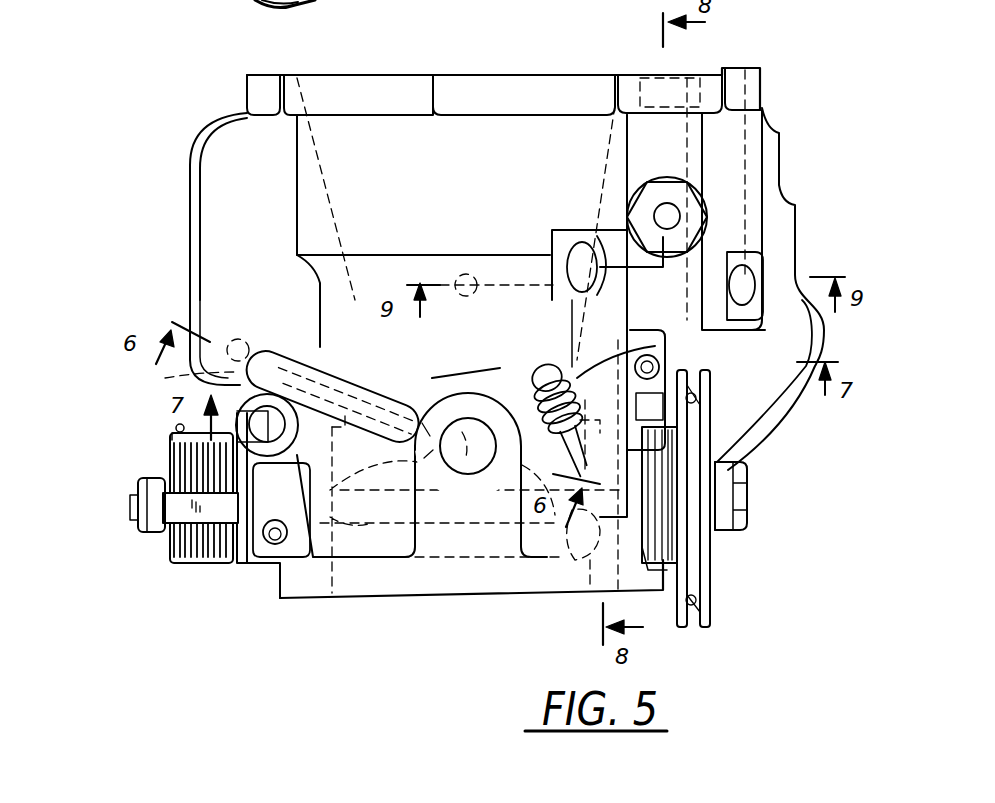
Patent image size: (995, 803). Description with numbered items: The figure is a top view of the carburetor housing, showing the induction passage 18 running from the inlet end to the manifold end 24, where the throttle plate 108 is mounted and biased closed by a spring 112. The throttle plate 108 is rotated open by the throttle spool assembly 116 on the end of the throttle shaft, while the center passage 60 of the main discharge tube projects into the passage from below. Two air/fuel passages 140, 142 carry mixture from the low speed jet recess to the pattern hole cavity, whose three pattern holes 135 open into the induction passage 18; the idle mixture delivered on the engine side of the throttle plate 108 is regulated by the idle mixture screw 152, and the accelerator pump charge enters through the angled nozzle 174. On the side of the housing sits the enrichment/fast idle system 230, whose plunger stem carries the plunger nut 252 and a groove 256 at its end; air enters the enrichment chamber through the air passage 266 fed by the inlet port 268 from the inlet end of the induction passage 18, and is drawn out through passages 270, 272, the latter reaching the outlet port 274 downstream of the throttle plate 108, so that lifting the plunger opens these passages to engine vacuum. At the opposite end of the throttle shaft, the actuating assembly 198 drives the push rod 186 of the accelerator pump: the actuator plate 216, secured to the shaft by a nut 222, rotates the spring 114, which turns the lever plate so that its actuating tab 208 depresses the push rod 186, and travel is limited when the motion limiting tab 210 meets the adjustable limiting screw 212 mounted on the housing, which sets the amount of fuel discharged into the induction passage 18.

The induction passage 18 is at (305, 115).
The manifold end 24 is at (338, 598).
The center passage 60 is at (463, 273).
The throttle plate 108 is at (463, 545).
The spring 112 is at (673, 428).
The spring 114 is at (195, 565).
The throttle spool assembly 116 is at (712, 615).
The pattern holes 135 is at (555, 412).
The air/fuel passage 140 is at (233, 338).
The air/fuel passage 142 is at (357, 396).
The idle mixture screw 152 is at (672, 362).
The nozzle 174 is at (478, 368).
The push rod 186 is at (175, 381).
The actuating assembly 198 is at (152, 567).
The actuating tab 208 is at (268, 420).
The motion limiting tab 210 is at (240, 570).
The limiting screw 212 is at (297, 557).
The actuator plate 216 is at (170, 448).
The nut 222 is at (140, 533).
The enrichment/fast idle system 230 is at (626, 200).
The plunger nut 252 is at (700, 205).
The groove 256 is at (672, 216).
The air passage 266 is at (690, 100).
The inlet port 268 is at (604, 142).
The passage 270 is at (700, 288).
The passage 272 is at (587, 331).
The outlet port 274 is at (580, 560).